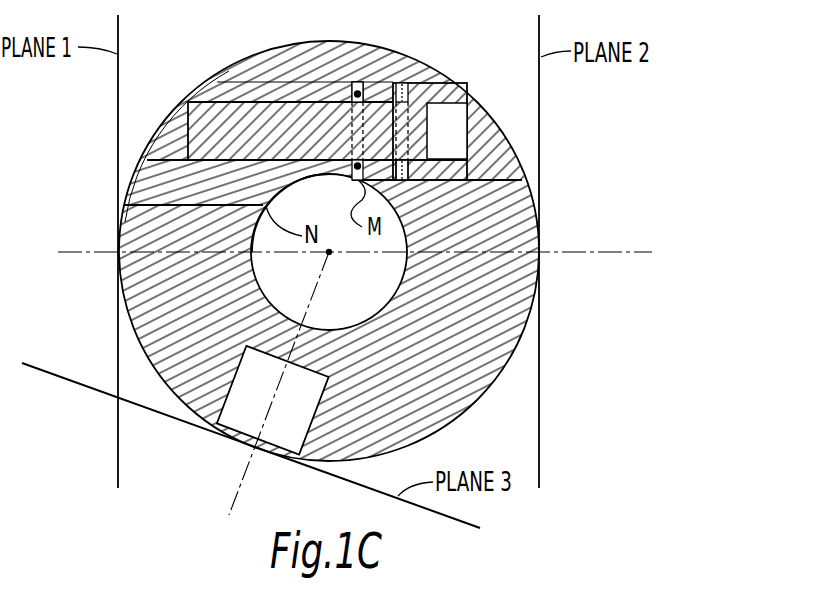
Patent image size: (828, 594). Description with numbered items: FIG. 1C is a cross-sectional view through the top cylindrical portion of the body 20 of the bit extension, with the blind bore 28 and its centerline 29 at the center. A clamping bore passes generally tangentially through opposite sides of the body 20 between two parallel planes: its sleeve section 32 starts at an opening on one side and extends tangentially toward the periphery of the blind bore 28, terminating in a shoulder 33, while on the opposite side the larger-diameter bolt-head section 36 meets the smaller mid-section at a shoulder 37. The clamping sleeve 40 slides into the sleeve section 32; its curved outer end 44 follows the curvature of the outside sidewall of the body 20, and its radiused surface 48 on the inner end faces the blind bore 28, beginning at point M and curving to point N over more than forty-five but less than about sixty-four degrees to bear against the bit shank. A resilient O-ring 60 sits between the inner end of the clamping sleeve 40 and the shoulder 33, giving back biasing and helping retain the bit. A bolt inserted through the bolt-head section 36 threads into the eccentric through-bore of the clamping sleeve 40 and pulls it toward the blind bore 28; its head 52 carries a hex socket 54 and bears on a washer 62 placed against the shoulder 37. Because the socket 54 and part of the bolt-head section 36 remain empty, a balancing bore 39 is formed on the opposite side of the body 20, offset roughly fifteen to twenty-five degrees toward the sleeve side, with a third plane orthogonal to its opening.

The body 20 is at (253, 58).
The blind bore 28 is at (272, 282).
The centerline 29 is at (330, 254).
The sleeve section 32 is at (148, 204).
The shoulder 33 is at (368, 98).
The bolt-head section 36 is at (512, 180).
The shoulder 37 is at (407, 82).
The balancing bore 39 is at (250, 426).
The clamping sleeve 40 is at (147, 161).
The curved outer end 44 is at (158, 134).
The radiused surface 48 is at (278, 184).
The head 52 is at (462, 84).
The hex socket 54 is at (452, 136).
The O-ring 60 is at (369, 99).
The washer 62 is at (403, 183).